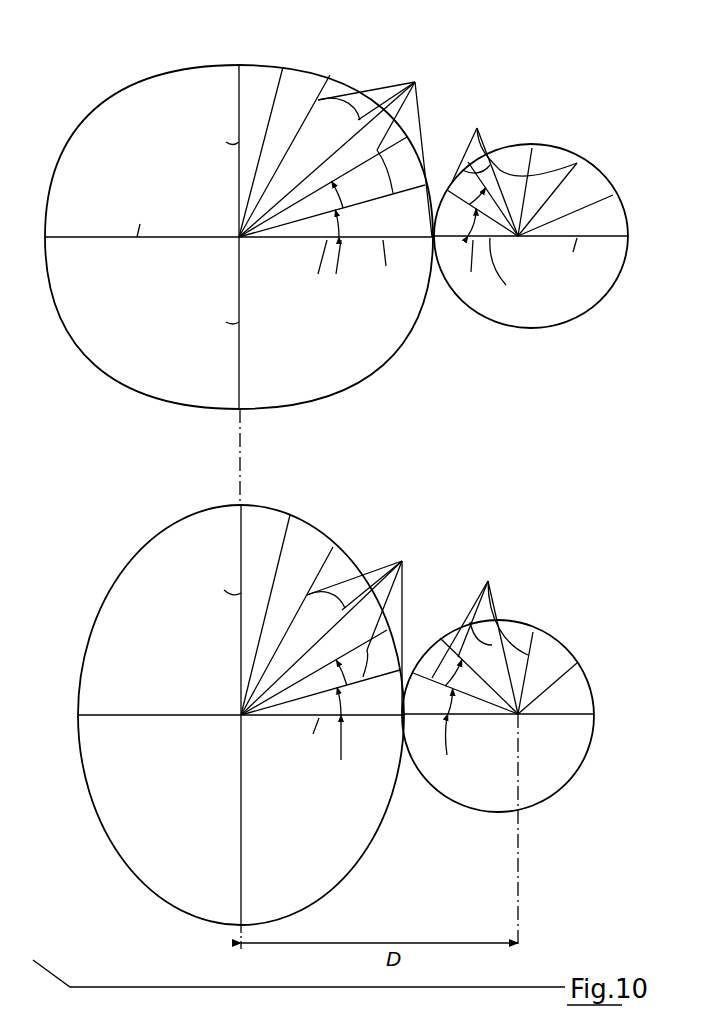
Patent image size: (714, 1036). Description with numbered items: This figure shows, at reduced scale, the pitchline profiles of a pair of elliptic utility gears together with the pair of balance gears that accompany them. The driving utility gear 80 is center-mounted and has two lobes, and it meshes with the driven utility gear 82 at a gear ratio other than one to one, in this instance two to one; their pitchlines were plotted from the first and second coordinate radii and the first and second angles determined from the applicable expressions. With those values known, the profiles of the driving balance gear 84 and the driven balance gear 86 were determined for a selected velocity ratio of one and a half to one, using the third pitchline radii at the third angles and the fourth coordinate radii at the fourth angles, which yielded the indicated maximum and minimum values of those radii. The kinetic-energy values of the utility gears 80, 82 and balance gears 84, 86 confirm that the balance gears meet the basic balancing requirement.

The driving utility gear 80 is at (152, 536).
The driven utility gear 82 is at (564, 640).
The driving balance gear 84 is at (156, 68).
The driven balance gear 86 is at (601, 172).